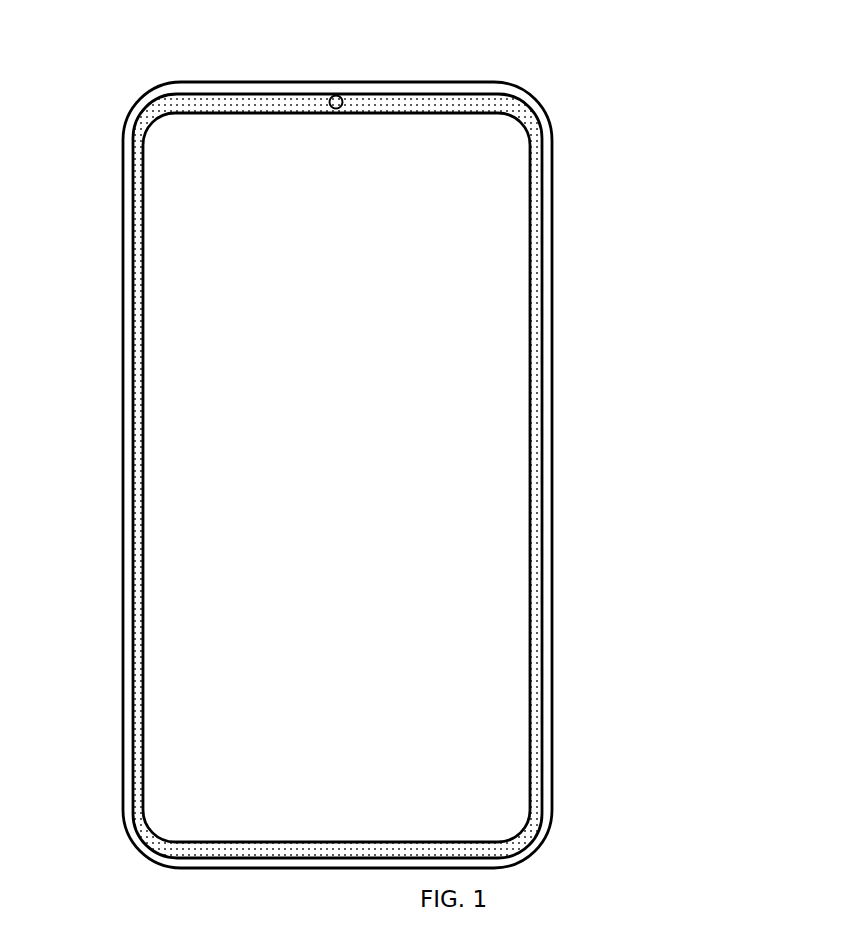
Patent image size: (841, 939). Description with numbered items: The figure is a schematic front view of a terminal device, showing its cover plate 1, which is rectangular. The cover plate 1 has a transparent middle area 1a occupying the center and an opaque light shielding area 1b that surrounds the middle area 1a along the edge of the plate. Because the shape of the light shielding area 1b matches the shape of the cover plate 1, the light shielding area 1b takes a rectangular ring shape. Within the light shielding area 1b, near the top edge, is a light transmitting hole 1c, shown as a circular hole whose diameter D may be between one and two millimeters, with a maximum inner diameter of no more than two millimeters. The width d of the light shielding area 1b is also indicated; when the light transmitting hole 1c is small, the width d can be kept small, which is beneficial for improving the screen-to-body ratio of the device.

The cover plate 1 is at (717, 125).
The transparent middle area 1a is at (470, 216).
The light shielding area 1b is at (472, 108).
The light transmitting hole 1c is at (352, 82).
The diameter of the light transmitting hole D is at (342, 125).
The width of the light shielding area d is at (176, 113).